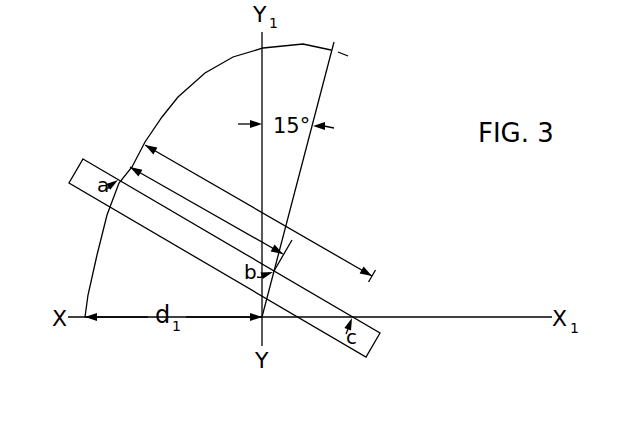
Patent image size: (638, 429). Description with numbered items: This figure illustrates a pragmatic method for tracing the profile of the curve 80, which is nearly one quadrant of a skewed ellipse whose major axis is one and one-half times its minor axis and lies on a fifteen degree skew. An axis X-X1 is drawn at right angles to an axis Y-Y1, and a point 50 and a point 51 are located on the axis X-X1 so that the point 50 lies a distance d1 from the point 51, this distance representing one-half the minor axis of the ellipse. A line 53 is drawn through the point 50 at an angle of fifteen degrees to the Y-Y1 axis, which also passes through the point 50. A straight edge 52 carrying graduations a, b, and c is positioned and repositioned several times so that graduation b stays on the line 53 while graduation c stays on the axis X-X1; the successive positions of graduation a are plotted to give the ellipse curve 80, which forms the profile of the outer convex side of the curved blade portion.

The curve 80 is at (177, 100).
The straight edge 52 is at (93, 163).
The line 53 is at (302, 170).
The point 51 is at (84, 334).
The point 50 is at (259, 322).